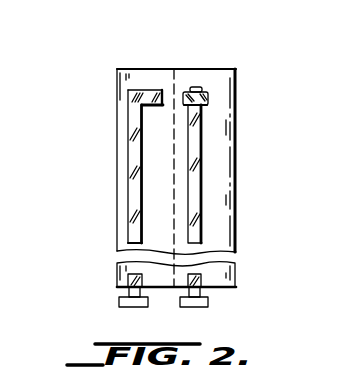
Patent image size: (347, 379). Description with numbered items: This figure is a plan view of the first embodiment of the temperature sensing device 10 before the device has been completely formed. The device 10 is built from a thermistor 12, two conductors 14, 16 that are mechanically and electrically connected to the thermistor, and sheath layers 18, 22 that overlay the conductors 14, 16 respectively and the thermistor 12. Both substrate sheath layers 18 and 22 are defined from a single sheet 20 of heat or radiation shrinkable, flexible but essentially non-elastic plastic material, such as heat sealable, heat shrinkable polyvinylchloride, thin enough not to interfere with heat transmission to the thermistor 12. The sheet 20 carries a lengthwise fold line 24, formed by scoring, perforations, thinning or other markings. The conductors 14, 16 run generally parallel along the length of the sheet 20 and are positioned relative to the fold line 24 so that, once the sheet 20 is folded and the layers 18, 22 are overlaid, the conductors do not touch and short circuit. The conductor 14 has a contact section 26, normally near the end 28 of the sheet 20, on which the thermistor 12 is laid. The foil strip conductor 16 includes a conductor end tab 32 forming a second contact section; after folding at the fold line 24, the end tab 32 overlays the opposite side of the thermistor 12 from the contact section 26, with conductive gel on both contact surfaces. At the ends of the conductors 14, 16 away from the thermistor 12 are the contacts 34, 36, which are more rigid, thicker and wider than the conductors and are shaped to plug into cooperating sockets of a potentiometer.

The temperature sensing device 10 is at (110, 104).
The thermistor 12 is at (211, 97).
The conductor 14 is at (201, 162).
The foil strip conductor 16 is at (132, 145).
The sheath layer 18 is at (238, 218).
The sheet 20 is at (236, 182).
The sheath layer 22 is at (116, 203).
The fold line 24 is at (178, 83).
The contact section 26 is at (209, 104).
The end 28 is at (208, 68).
The conductor end tab 32 is at (147, 90).
The contact 34 is at (208, 302).
The contact 36 is at (118, 302).